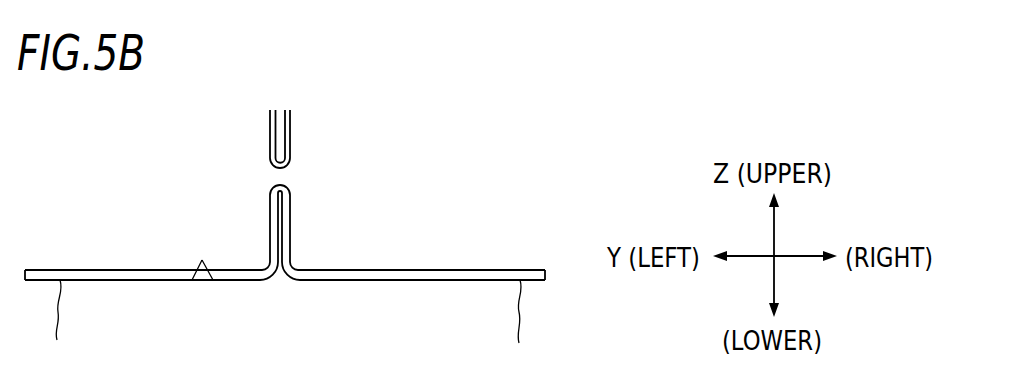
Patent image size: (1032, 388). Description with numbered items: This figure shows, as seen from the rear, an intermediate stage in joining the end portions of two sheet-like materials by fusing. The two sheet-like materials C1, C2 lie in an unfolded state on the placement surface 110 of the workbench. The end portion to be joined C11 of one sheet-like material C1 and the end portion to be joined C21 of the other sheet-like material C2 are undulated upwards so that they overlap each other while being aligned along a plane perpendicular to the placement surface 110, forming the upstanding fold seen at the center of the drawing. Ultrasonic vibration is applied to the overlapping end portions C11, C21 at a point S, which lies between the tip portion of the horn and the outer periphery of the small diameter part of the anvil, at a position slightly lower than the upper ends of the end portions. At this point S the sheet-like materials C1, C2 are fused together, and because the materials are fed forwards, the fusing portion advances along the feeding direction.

The sheet-like material C1 is at (115, 270).
The sheet-like material C2 is at (442, 270).
The end portion to be joined C11 is at (271, 234).
The end portion to be joined C21 is at (293, 233).
The point S is at (291, 176).
The placement surface 110 is at (202, 260).